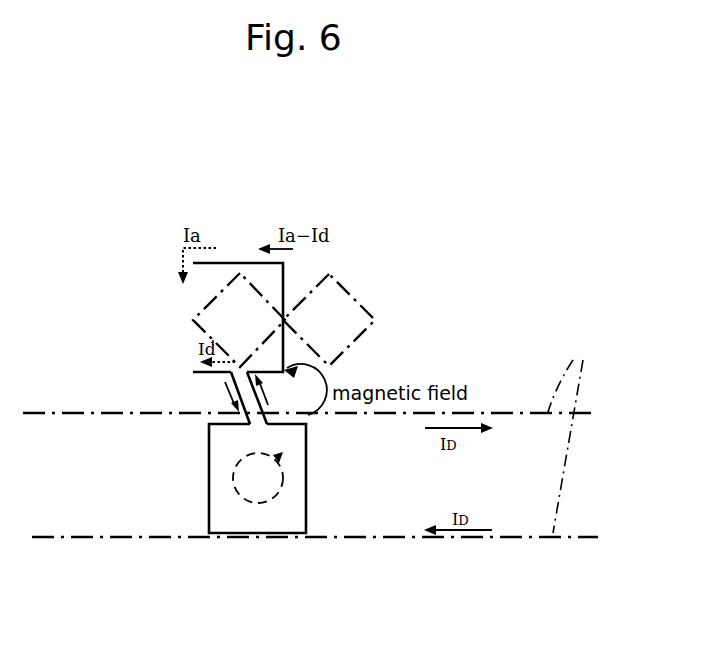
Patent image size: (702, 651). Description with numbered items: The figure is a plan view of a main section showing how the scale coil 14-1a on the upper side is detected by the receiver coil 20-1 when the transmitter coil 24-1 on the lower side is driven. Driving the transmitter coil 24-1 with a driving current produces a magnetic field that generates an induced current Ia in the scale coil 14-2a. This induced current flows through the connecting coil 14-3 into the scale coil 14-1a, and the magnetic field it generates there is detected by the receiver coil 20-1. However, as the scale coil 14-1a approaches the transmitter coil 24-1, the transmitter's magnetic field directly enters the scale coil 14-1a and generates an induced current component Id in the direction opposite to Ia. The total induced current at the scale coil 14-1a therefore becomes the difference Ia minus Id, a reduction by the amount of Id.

The scale coil 14-1a is at (250, 263).
The scale coil 14-2a is at (209, 490).
The connecting coil 14-3 is at (222, 376).
The receiver coil 20-1 is at (340, 283).
The transmitter coil 24-1 is at (313, 437).